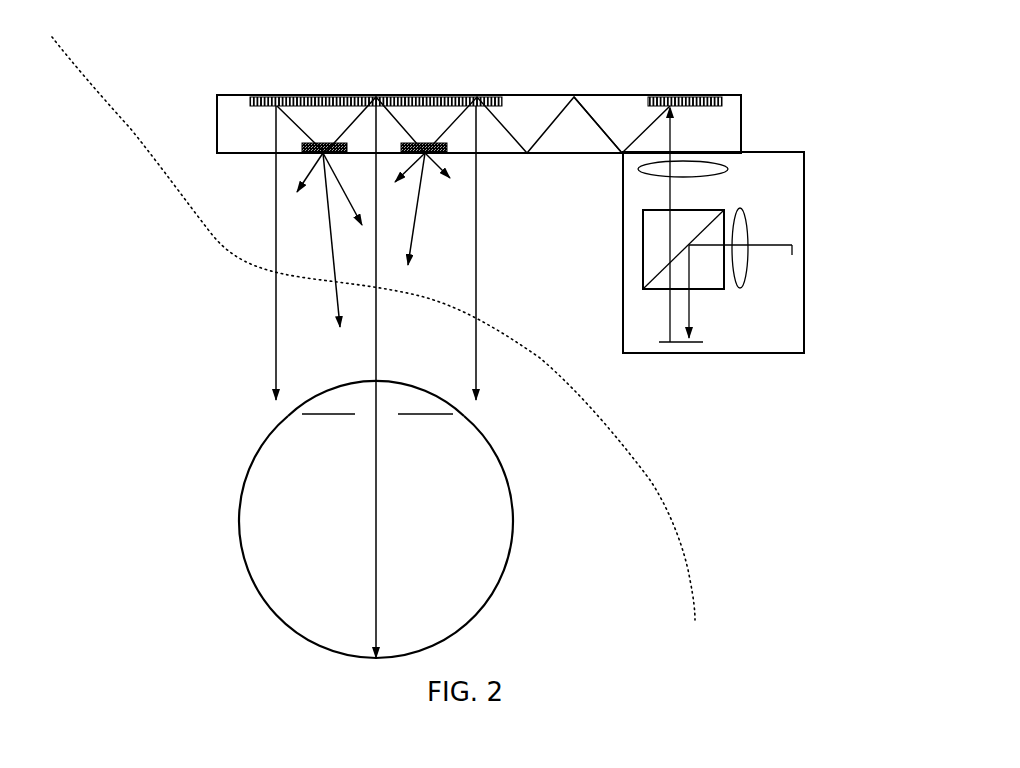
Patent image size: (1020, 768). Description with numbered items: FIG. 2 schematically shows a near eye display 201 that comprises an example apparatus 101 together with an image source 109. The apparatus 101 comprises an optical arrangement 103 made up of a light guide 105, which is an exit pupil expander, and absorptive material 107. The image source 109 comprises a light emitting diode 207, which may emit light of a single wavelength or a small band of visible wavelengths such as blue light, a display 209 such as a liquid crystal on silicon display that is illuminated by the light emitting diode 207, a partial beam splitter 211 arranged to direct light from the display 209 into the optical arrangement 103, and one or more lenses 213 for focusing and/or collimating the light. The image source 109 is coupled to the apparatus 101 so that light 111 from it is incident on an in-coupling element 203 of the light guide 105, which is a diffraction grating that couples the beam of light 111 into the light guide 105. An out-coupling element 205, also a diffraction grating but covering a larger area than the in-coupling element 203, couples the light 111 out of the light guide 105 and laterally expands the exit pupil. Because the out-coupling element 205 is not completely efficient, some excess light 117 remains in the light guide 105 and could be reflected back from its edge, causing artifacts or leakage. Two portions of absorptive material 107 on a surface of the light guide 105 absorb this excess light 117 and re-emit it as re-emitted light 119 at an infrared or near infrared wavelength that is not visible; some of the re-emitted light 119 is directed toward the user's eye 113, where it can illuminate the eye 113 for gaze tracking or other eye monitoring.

The apparatus 101 is at (550, 68).
The optical arrangement 103 is at (217, 132).
The light guide 105 is at (745, 128).
The absorptive material 107 is at (305, 157).
The image source 109 is at (725, 355).
The light 111 is at (603, 132).
The user's eye 113 is at (515, 518).
The excess light 117 is at (450, 121).
The re-emitted light 119 is at (333, 240).
The near eye display 201 is at (204, 90).
The in-coupling element 203 is at (682, 96).
The out-coupling element 205 is at (396, 95).
The light emitting diode 207 is at (792, 246).
The display 209 is at (668, 343).
The partial beam splitter 211 is at (643, 272).
The lenses 213 is at (729, 170).